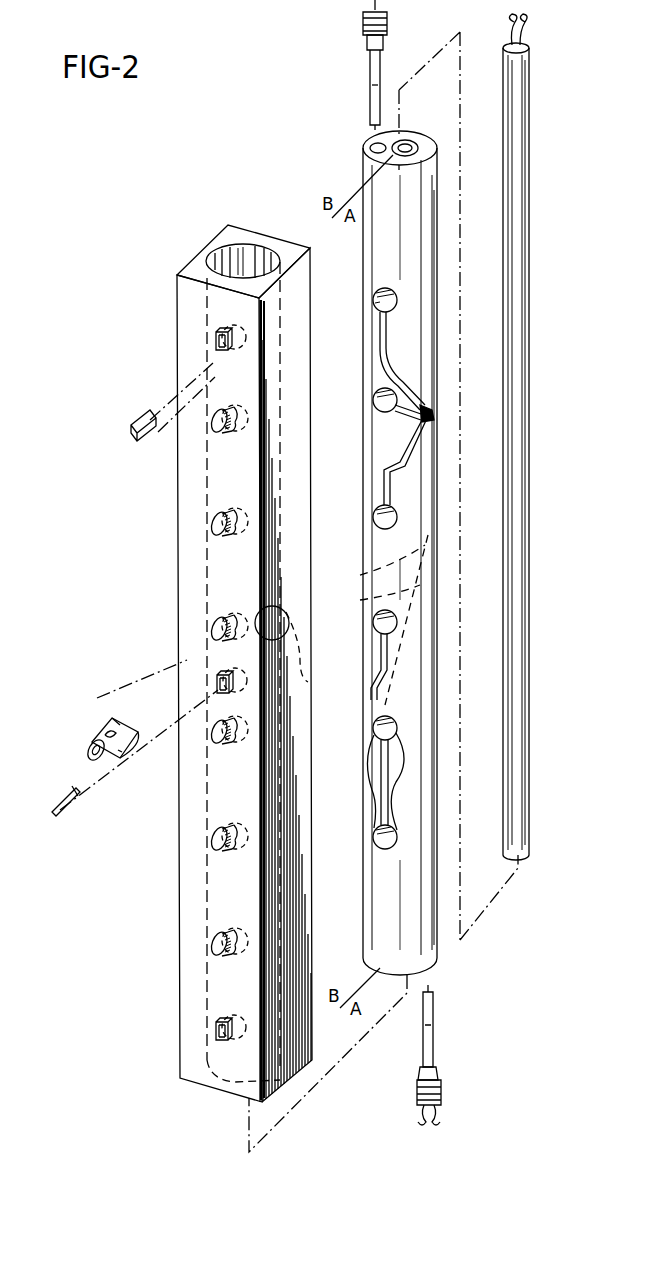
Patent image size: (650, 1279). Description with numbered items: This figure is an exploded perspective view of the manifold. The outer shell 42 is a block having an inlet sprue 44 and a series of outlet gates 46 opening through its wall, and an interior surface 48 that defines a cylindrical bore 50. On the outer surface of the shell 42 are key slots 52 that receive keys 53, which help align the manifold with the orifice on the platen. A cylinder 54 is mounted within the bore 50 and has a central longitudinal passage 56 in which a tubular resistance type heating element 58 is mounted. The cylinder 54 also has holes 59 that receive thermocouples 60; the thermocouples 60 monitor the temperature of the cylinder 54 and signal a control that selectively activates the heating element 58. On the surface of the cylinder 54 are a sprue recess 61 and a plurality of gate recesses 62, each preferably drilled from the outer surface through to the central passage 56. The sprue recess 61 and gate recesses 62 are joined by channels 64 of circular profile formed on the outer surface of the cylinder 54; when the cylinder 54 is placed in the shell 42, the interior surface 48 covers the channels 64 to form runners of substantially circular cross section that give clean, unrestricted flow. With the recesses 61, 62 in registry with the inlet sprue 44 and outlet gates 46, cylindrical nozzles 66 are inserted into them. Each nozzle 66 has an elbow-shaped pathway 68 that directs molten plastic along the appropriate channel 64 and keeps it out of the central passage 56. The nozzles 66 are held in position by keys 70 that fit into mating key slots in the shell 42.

The outer shell 42 is at (245, 240).
The inlet sprue 44 is at (298, 650).
The outlet gates 46 is at (213, 522).
The interior surface 48 is at (262, 262).
The cylindrical bore 50 is at (236, 255).
The key slots 52 is at (215, 338).
The keys 53 is at (138, 412).
The cylinder 54 is at (366, 262).
The central longitudinal passage 56 is at (407, 143).
The tubular resistance type heating element 58 is at (527, 386).
The holes 59 is at (375, 145).
The thermocouples 60 is at (365, 24).
The sprue recess 61 is at (362, 572).
The gate recesses 62 is at (377, 308).
The channels 64 is at (390, 440).
The nozzles 66 is at (126, 760).
The elbow-shaped pathway 68 is at (112, 720).
The keys 70 is at (62, 816).